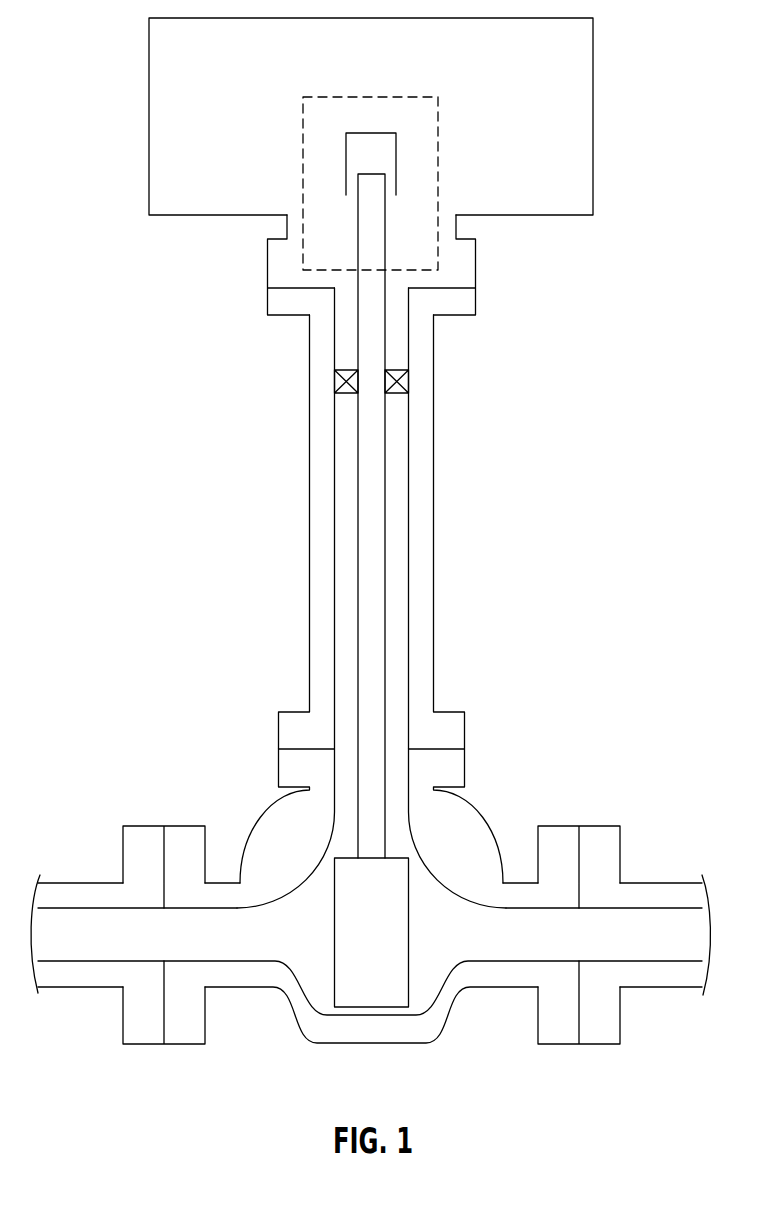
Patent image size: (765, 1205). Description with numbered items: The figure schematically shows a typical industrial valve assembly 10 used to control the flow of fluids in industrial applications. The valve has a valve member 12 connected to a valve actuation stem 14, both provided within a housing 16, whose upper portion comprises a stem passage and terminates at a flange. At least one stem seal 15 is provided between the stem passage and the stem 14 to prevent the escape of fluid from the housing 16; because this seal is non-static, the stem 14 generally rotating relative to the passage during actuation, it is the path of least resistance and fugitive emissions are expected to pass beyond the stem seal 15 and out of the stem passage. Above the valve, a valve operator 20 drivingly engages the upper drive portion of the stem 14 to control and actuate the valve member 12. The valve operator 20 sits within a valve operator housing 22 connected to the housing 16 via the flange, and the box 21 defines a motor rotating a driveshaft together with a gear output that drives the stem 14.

The valve assembly 10 is at (526, 620).
The valve member 12 is at (392, 983).
The valve actuation stem 14 is at (377, 445).
The stem seal 15 is at (403, 382).
The housing 16 is at (310, 605).
The valve operator 20 is at (134, 138).
The motor and output 21 is at (427, 153).
The valve operator housing 22 is at (593, 62).